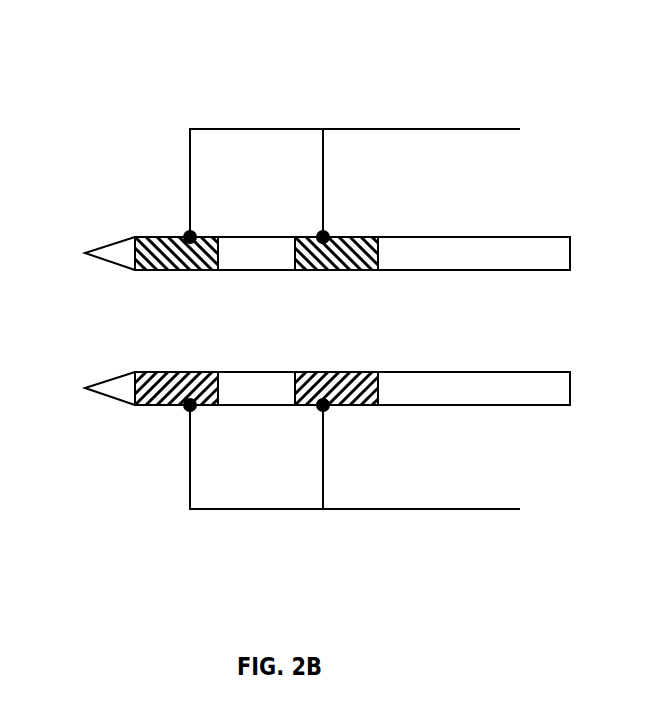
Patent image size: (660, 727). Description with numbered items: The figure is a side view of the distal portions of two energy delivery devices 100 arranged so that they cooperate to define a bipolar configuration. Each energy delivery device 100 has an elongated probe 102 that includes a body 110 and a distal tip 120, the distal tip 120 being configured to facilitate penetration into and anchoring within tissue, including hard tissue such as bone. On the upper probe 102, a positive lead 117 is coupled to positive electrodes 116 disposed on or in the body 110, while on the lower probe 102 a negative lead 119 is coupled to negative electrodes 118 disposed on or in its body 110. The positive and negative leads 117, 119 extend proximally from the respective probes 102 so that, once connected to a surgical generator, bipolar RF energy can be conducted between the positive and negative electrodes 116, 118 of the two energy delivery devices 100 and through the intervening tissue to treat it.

The energy delivery device 100 is at (362, 93).
The probe 102 is at (97, 154).
The body 110 is at (547, 245).
The positive electrodes 116 is at (200, 268).
The positive lead 117 is at (493, 128).
The negative electrodes 118 is at (148, 372).
The negative lead 119 is at (441, 510).
The distal tip 120 is at (100, 266).